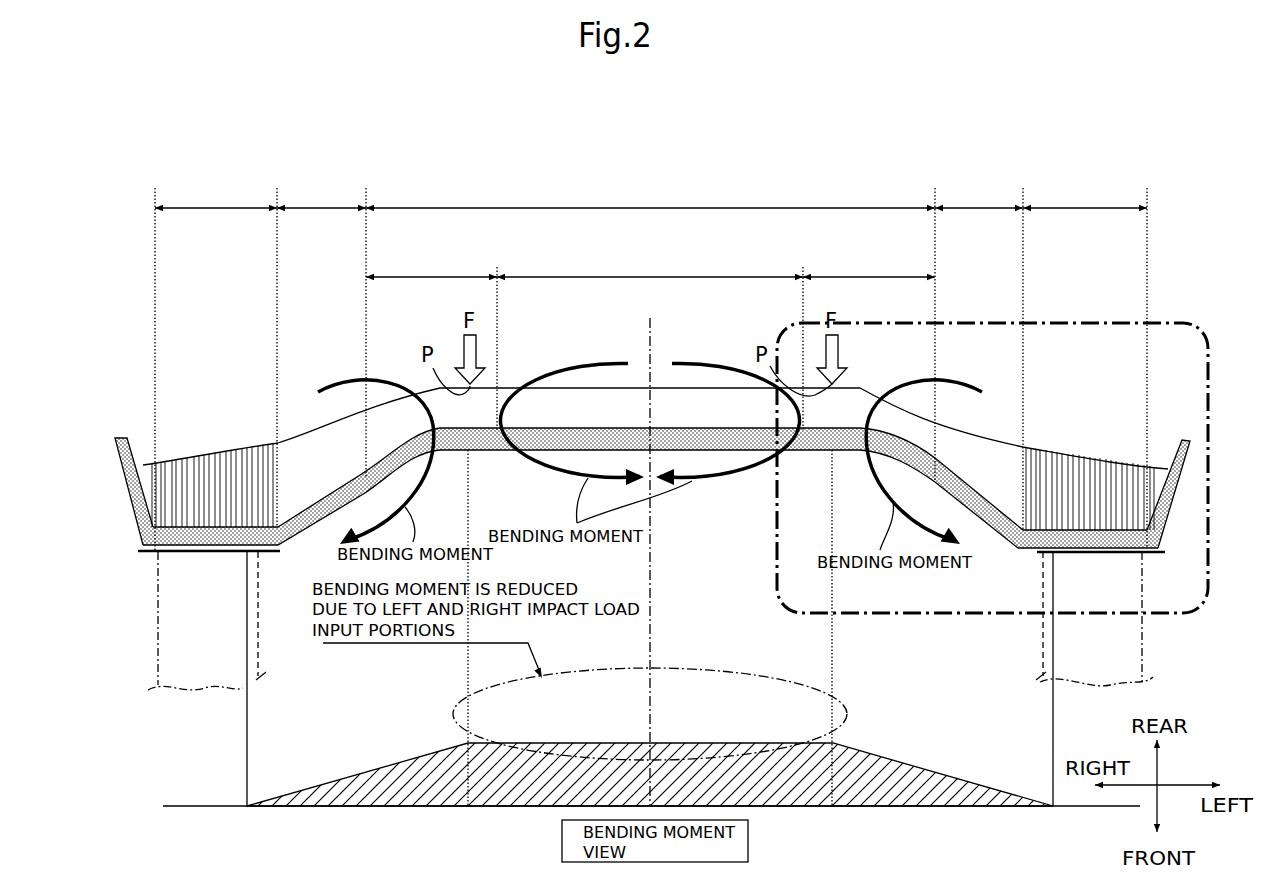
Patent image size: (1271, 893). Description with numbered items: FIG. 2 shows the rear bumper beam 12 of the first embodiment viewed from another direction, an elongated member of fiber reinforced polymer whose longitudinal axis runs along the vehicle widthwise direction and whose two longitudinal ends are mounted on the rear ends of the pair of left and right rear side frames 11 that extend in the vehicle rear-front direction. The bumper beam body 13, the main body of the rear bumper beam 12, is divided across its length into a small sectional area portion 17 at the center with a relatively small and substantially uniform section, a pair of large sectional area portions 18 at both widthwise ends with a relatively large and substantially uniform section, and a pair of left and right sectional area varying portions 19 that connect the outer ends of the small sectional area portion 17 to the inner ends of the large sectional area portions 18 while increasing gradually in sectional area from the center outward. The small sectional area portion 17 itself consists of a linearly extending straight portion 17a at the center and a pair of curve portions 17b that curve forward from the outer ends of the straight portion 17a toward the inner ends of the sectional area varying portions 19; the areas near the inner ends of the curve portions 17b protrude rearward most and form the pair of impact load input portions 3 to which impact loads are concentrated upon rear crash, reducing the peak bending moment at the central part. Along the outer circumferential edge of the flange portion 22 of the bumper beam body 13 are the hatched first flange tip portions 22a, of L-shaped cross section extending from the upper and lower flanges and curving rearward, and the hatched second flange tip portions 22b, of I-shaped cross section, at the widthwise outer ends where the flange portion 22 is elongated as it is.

The impact load input portion 3 is at (765, 586).
The rear side frame 11 is at (158, 638).
The rear bumper beam 12 is at (535, 362).
The bumper beam body 13 is at (1045, 440).
The small sectional area portion 17 is at (650, 192).
The straight portion 17a is at (650, 265).
The curve portion 17b is at (650, 254).
The large sectional area portion 18 is at (1112, 172).
The sectional area varying portion 19 is at (983, 207).
The flange portion 22 is at (521, 452).
The first flange tip portion 22a is at (850, 442).
The second flange tip portion 22b is at (118, 442).